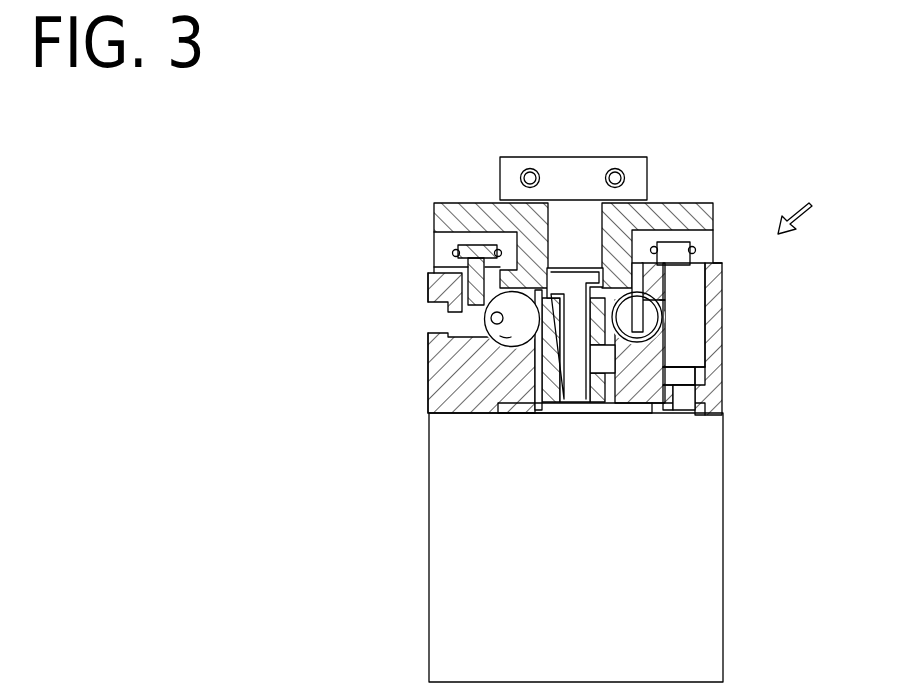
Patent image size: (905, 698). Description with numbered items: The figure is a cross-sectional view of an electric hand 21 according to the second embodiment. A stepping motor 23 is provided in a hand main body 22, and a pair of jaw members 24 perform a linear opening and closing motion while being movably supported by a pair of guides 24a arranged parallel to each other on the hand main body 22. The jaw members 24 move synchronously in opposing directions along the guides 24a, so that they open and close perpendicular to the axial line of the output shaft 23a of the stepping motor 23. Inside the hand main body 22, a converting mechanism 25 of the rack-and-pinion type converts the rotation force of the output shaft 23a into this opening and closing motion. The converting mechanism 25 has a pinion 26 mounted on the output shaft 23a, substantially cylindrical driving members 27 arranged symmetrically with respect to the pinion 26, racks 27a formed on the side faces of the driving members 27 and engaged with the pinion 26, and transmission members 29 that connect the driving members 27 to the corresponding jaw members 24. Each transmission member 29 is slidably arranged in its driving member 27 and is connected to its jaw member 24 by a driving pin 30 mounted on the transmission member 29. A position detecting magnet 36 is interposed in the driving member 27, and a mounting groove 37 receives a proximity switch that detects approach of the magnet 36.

The electric hand 21 is at (814, 206).
The hand main body 22 is at (705, 412).
The stepping motor 23 is at (487, 472).
The output shaft 23a is at (575, 400).
The jaw member 24 is at (612, 162).
The guide 24a is at (455, 257).
The converting mechanism 25 is at (684, 319).
The pinion 26 is at (560, 370).
The driving member 27 is at (537, 337).
The rack 27a is at (500, 274).
The transmission member 29 is at (662, 302).
The driving pin 30 is at (503, 262).
The position detecting magnet 36 is at (485, 319).
The mounting groove 37 is at (491, 318).